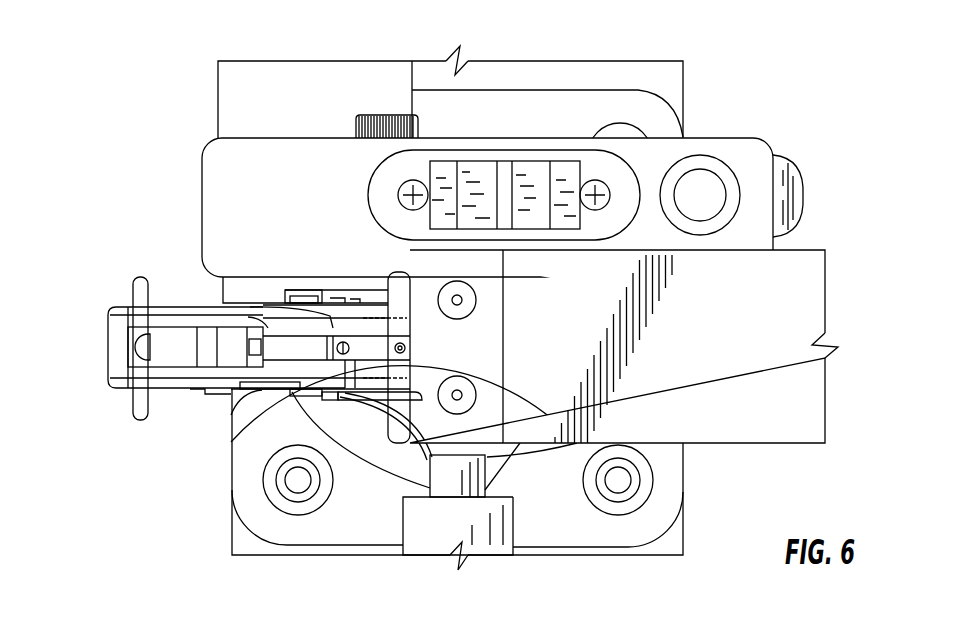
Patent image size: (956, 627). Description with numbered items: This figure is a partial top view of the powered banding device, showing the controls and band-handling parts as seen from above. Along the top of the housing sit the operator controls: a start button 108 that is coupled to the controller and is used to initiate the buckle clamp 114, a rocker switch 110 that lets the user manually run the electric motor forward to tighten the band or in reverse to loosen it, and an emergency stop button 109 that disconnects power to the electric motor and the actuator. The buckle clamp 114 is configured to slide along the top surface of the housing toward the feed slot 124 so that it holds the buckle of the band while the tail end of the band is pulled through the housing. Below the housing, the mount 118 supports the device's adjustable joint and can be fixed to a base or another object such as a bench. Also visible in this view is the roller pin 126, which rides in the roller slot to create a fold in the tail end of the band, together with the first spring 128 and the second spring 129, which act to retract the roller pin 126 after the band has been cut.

The start button 108 is at (703, 172).
The emergency stop button 109 is at (793, 178).
The rocker switch 110 is at (528, 177).
The buckle clamp 114 is at (142, 295).
The mount 118 is at (243, 480).
The feed slot 124 is at (207, 347).
The roller pin 126 is at (265, 328).
The first spring 128 is at (232, 443).
The second spring 129 is at (300, 300).